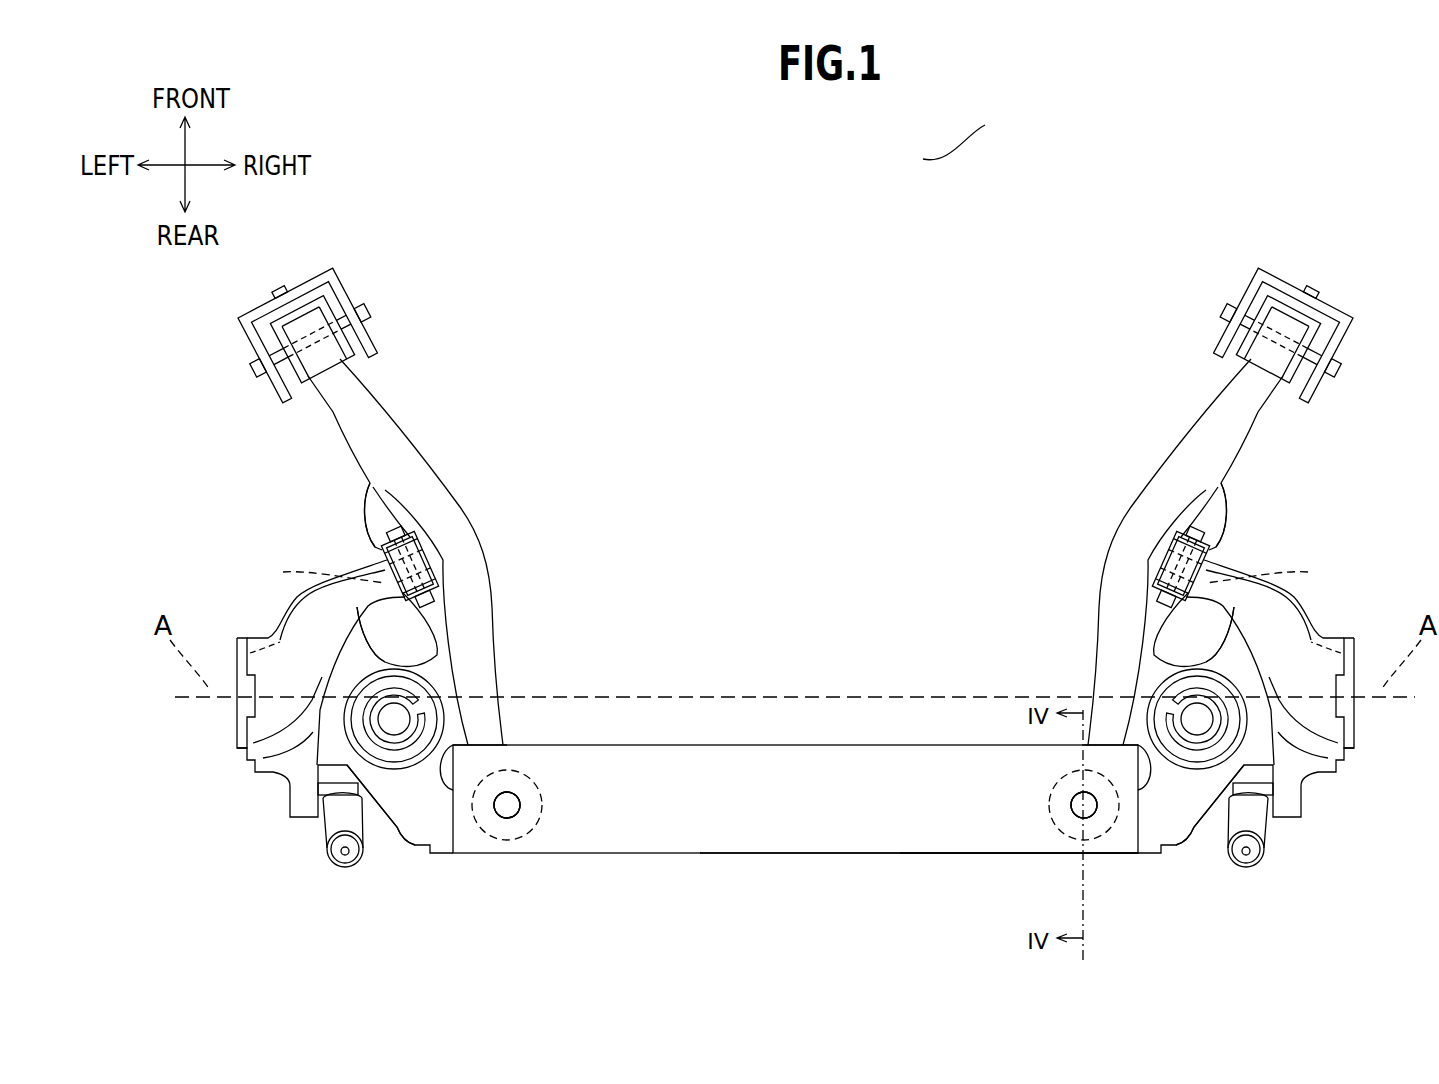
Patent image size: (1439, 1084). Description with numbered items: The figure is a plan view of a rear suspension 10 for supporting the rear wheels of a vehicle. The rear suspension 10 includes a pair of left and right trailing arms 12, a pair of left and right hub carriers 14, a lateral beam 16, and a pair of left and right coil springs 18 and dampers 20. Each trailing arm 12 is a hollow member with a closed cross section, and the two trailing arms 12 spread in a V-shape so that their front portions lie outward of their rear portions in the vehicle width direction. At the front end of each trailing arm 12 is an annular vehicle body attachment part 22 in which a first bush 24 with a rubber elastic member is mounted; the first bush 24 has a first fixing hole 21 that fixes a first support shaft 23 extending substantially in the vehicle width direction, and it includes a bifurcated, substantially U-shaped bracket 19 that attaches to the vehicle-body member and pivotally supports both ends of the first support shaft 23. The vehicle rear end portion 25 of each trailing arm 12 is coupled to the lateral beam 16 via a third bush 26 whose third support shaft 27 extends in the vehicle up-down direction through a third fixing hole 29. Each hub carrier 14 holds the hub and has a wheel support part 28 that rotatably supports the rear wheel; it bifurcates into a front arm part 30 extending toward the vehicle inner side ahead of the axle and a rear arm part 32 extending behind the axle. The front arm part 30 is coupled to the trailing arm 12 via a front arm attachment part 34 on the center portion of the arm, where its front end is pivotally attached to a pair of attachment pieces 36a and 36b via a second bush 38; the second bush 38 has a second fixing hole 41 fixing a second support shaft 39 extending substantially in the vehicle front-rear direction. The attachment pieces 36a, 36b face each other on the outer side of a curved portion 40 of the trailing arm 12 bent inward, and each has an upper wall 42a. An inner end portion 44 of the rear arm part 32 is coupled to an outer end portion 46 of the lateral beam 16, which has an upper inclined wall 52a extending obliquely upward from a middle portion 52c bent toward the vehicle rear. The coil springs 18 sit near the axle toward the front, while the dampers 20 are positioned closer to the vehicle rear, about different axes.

The rear suspension 10 is at (921, 156).
The trailing arm 12 is at (467, 442).
The hub carrier 14 is at (260, 800).
The lateral beam 16 is at (790, 869).
The coil spring 18 is at (410, 777).
The bracket 19 is at (292, 295).
The damper 20 is at (336, 855).
The first fixing hole 21 is at (290, 296).
The vehicle body attachment part 22 is at (283, 294).
The first support shaft 23 is at (360, 305).
The first bush 24 is at (252, 340).
The vehicle rear end portion 25 is at (1070, 817).
The third bush 26 is at (545, 781).
The third support shaft 27 is at (1070, 807).
The wheel support part 28 is at (229, 717).
The third fixing hole 29 is at (1085, 818).
The front arm part 30 is at (266, 620).
The rear arm part 32 is at (376, 869).
The front arm attachment part 34 is at (446, 539).
The attachment piece 36a is at (356, 495).
The attachment piece 36b is at (418, 634).
The second bush 38 is at (430, 572).
The second support shaft 39 is at (393, 557).
The curved portion 40 is at (445, 545).
The second fixing hole 41 is at (795, 570).
The upper wall 42a is at (445, 613).
The inner end portion 44 is at (468, 853).
The outer end portion 46 is at (457, 745).
The upper inclined wall 52a is at (882, 835).
The middle portion 52c is at (952, 852).